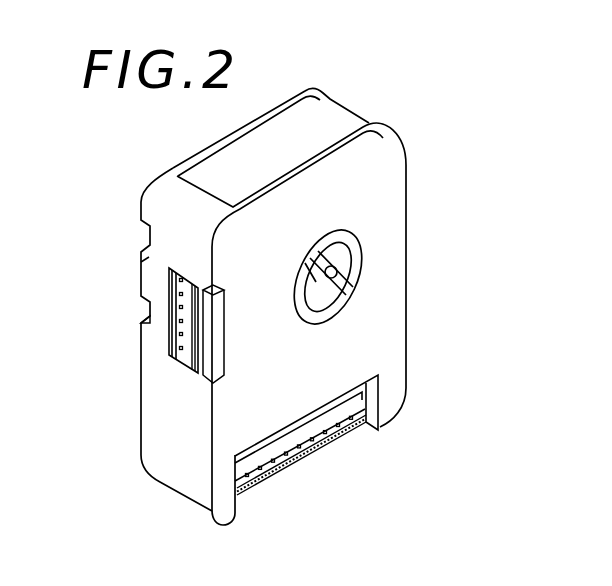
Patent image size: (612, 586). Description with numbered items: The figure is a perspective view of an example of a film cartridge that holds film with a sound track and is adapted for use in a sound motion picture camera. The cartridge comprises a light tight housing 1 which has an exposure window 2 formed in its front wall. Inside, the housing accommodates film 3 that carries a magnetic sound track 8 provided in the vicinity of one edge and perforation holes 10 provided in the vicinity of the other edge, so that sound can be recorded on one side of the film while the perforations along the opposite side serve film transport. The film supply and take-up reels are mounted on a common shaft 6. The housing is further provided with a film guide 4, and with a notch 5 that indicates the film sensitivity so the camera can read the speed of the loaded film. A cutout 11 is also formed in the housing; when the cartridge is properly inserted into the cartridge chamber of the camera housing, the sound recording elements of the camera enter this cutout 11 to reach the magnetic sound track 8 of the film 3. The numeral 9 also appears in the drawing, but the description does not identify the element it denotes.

The light tight housing 1 is at (223, 502).
The exposure window 2 is at (172, 335).
The film 3 is at (185, 363).
The film guide 4 is at (141, 311).
The notch 5 is at (141, 236).
The common shaft 6 is at (334, 252).
The magnetic sound track 8 is at (306, 452).
The contact holes 9 is at (264, 450).
The perforation holes 10 is at (183, 290).
The cutout 11 is at (351, 398).